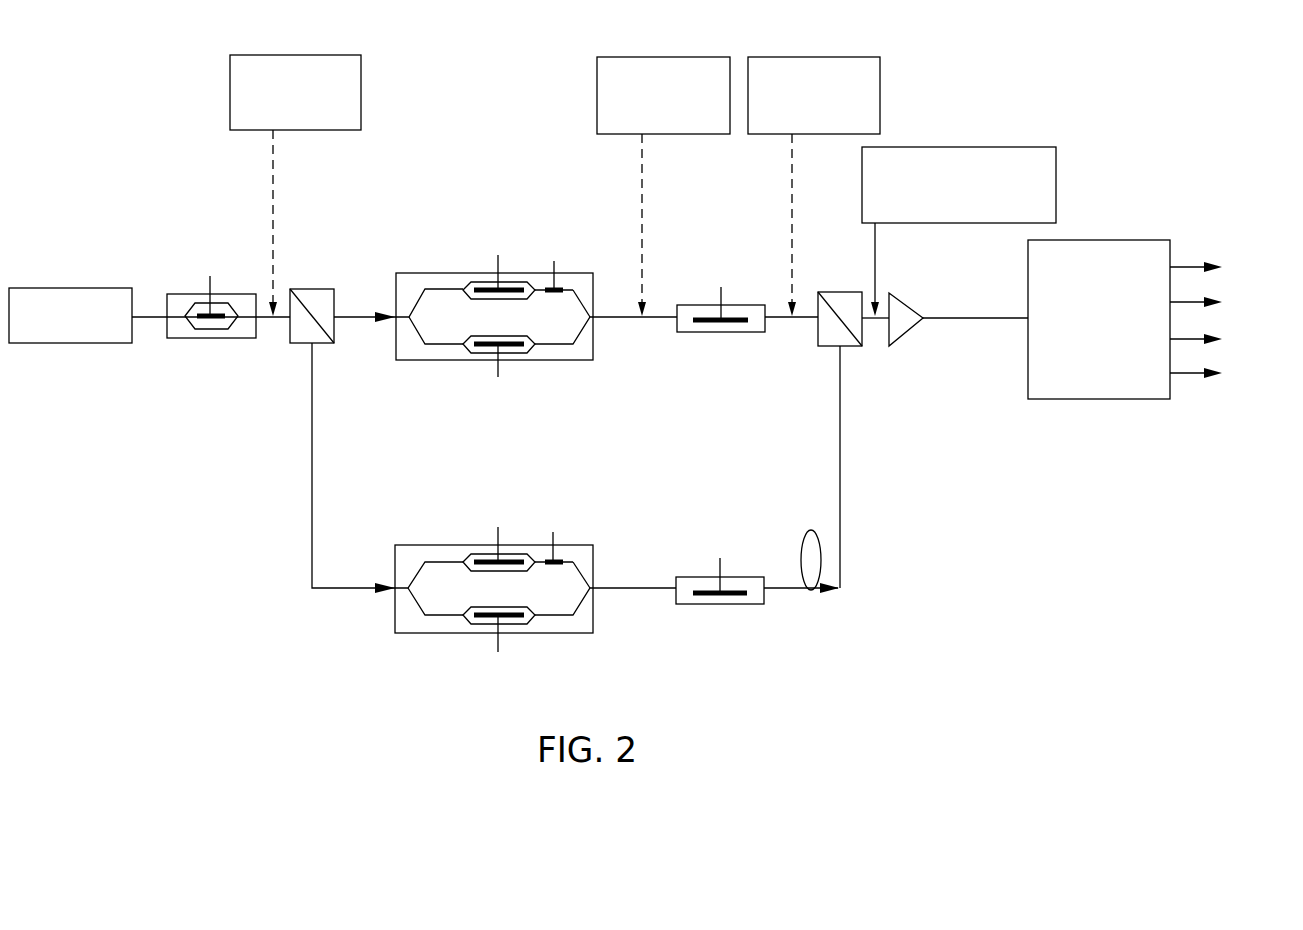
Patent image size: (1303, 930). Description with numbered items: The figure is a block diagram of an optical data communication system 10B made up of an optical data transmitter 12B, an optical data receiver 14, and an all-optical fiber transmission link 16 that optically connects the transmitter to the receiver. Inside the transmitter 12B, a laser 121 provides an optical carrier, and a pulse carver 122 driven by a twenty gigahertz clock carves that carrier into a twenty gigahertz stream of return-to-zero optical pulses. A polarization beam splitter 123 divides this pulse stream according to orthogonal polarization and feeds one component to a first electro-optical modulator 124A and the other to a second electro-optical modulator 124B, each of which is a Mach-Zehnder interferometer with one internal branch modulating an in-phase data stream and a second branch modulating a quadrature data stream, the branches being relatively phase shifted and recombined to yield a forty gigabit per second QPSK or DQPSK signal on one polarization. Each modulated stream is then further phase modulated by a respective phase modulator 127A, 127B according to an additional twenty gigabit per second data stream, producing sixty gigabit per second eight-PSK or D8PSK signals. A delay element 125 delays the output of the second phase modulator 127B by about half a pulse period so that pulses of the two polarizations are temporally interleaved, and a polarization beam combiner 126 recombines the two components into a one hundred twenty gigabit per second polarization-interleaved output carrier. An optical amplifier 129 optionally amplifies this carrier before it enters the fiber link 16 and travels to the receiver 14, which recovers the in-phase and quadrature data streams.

The optical data communication system 10B is at (1002, 647).
The optical data transmitter 12B is at (232, 628).
The optical data receiver 14 is at (1082, 399).
The all-optical fiber transmission link 16 is at (996, 318).
The laser 121 is at (38, 288).
The pulse carver 122 is at (185, 294).
The polarization beam splitter 123 is at (312, 289).
The first electro-optical modulator 124A is at (553, 360).
The second electro-optical modulator 124B is at (393, 608).
The delay element 125 is at (815, 531).
The polarization beam combiner 126 is at (853, 346).
The first phase modulator 127A is at (758, 332).
The second phase modulator 127B is at (688, 577).
The optical amplifier 129 is at (906, 294).